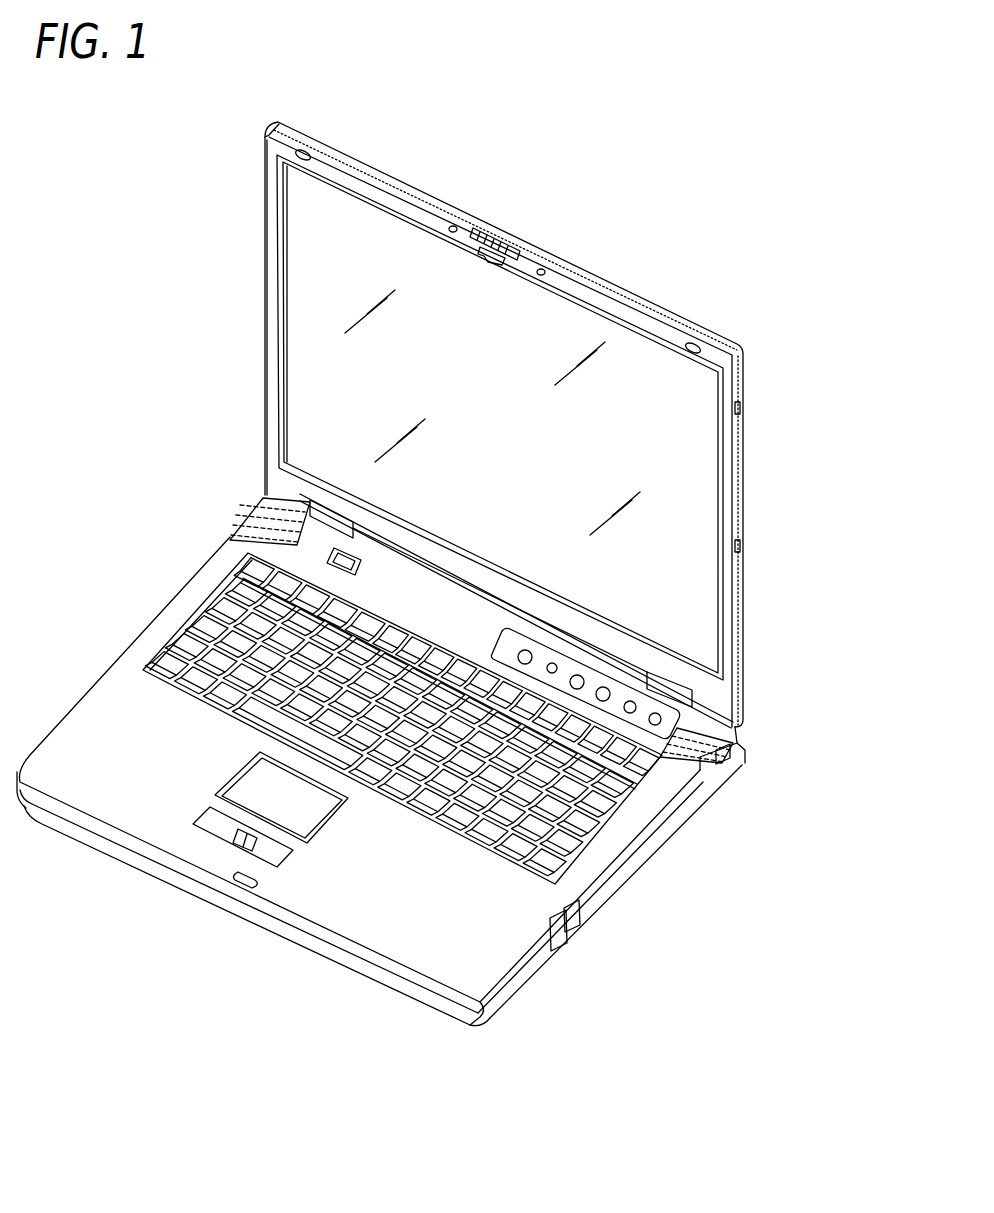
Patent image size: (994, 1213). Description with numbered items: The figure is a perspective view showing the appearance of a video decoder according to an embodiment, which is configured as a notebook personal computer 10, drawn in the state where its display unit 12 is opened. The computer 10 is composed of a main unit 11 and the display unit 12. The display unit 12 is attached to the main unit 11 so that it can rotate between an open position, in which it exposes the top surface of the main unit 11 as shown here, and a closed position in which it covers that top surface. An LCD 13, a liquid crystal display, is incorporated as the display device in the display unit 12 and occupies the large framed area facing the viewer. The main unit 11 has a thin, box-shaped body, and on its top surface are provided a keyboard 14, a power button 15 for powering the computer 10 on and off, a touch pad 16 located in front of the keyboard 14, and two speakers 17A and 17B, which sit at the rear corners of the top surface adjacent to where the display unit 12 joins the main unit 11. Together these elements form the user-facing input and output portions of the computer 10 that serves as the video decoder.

The notebook personal computer 10 is at (741, 900).
The main unit 11 is at (512, 992).
The display unit 12 is at (743, 566).
The LCD (liquid crystal display) 13 is at (693, 445).
The keyboard 14 is at (548, 828).
The power button 15 is at (336, 553).
The touch pad 16 is at (250, 803).
The speaker 17A is at (300, 526).
The speaker 17B is at (744, 729).